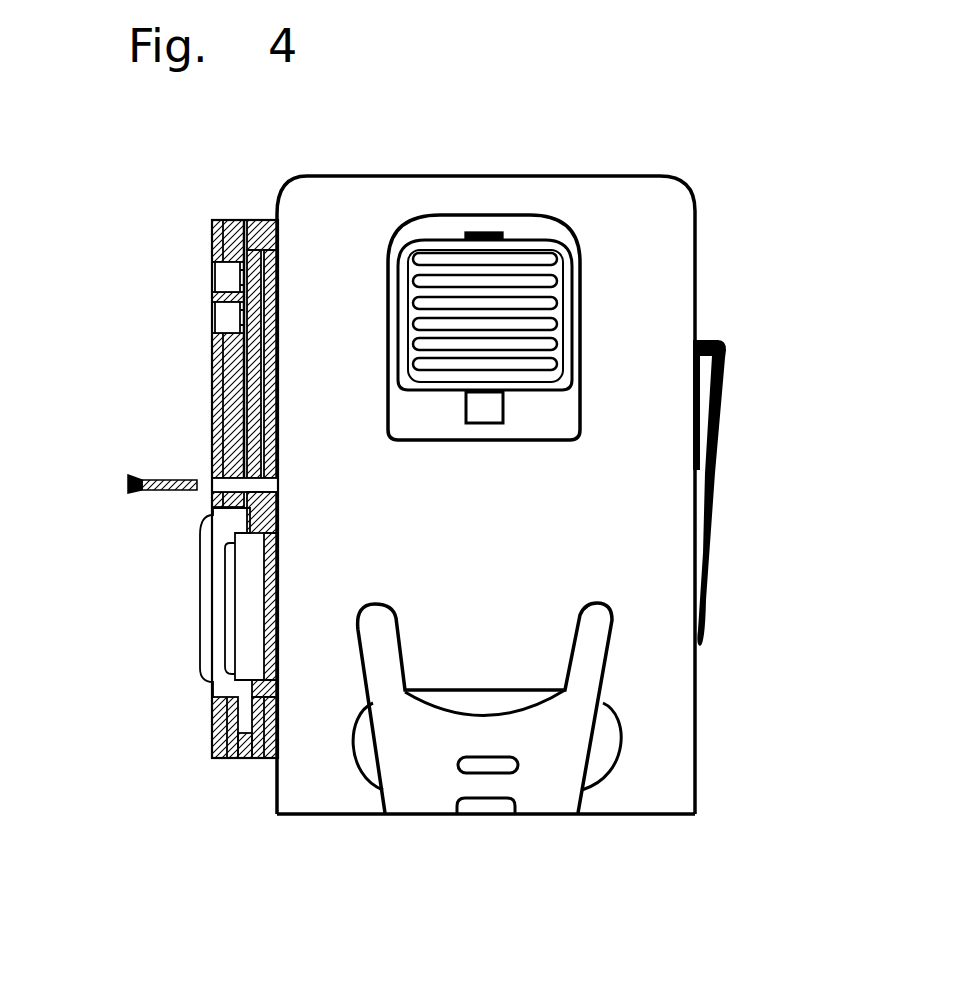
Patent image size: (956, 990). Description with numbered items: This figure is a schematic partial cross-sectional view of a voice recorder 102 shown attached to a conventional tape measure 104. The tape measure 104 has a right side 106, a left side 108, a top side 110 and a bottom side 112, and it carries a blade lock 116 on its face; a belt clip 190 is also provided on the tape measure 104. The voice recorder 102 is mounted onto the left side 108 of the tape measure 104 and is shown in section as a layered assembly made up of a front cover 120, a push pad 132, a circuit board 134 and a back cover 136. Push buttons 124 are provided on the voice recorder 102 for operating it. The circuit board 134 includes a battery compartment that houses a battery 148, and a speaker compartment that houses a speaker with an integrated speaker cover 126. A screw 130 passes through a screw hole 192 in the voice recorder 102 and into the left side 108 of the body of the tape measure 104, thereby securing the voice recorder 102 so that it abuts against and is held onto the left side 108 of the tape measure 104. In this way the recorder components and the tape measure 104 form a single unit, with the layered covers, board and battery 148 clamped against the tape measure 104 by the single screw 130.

The voice recorder 102 is at (213, 718).
The tape measure 104 is at (467, 503).
The right side 106 is at (696, 752).
The left side 108 is at (277, 783).
The top side 110 is at (570, 176).
The bottom side 112 is at (322, 775).
The blade lock 116 is at (513, 290).
The front cover 120 is at (218, 417).
The push buttons 124 is at (230, 318).
The speaker 126 is at (205, 530).
The screw 130 is at (128, 480).
The push pad 132 is at (237, 220).
The circuit board 134 is at (255, 220).
The back cover 136 is at (268, 220).
The battery 148 is at (248, 643).
The belt clip 190 is at (708, 460).
The screw hole 192 is at (217, 478).